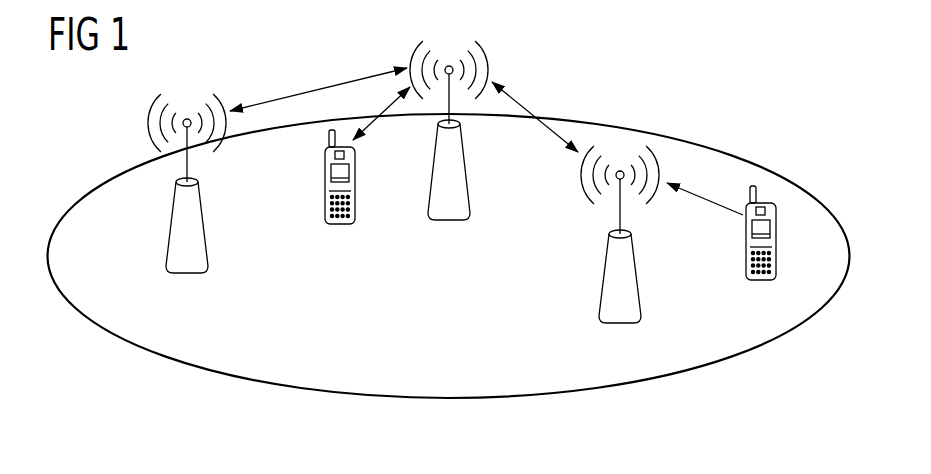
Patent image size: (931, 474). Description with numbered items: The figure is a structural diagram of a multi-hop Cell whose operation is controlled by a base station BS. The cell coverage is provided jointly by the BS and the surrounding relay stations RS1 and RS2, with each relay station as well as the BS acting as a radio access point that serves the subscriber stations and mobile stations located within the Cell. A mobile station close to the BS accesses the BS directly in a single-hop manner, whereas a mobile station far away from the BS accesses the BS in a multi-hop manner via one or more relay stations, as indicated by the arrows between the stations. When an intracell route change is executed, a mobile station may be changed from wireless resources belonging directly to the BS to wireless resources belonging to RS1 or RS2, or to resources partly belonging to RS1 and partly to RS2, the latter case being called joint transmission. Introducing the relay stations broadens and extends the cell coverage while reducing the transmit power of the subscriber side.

The relay station RS1 is at (187, 204).
The base station BS is at (449, 150).
The relay station RS2 is at (620, 255).
The multi-hop cell Cell is at (449, 256).